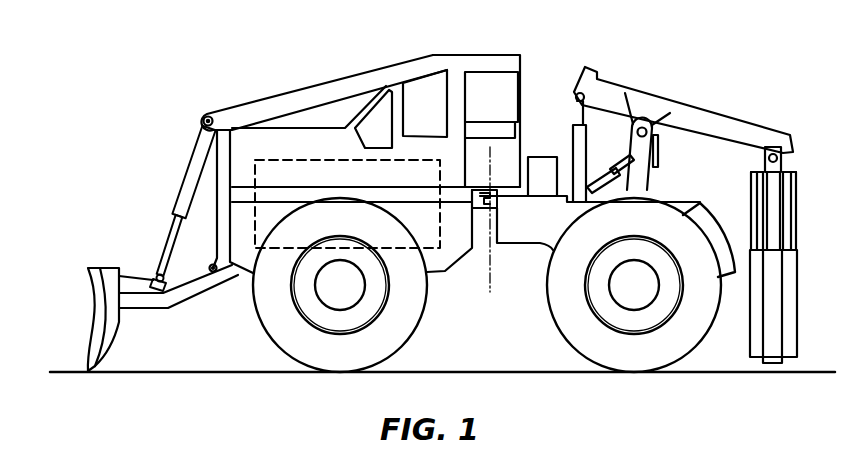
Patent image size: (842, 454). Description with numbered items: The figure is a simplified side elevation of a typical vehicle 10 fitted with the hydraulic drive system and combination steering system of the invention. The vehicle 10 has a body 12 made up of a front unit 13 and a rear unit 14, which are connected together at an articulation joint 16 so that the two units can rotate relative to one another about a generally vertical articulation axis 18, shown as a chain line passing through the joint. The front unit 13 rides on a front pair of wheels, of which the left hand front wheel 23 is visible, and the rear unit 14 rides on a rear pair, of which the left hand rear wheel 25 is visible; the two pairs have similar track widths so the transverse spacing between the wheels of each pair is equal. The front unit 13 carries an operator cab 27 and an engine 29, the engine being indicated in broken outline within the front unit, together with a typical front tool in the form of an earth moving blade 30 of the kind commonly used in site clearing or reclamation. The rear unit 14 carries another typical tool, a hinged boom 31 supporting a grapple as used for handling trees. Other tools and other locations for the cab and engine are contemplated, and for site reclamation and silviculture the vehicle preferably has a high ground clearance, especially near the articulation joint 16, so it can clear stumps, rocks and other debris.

The vehicle 10 is at (295, 86).
The body 12 is at (360, 164).
The front unit 13 is at (243, 250).
The rear unit 14 is at (533, 227).
The articulation joint 16 is at (477, 253).
The articulation axis 18 is at (497, 157).
The left hand front wheel 23 is at (290, 334).
The left hand rear wheel 25 is at (587, 335).
The operator cab 27 is at (433, 64).
The engine 29 is at (270, 160).
The earth moving blade 30 is at (90, 293).
The hinged boom 31 is at (727, 96).